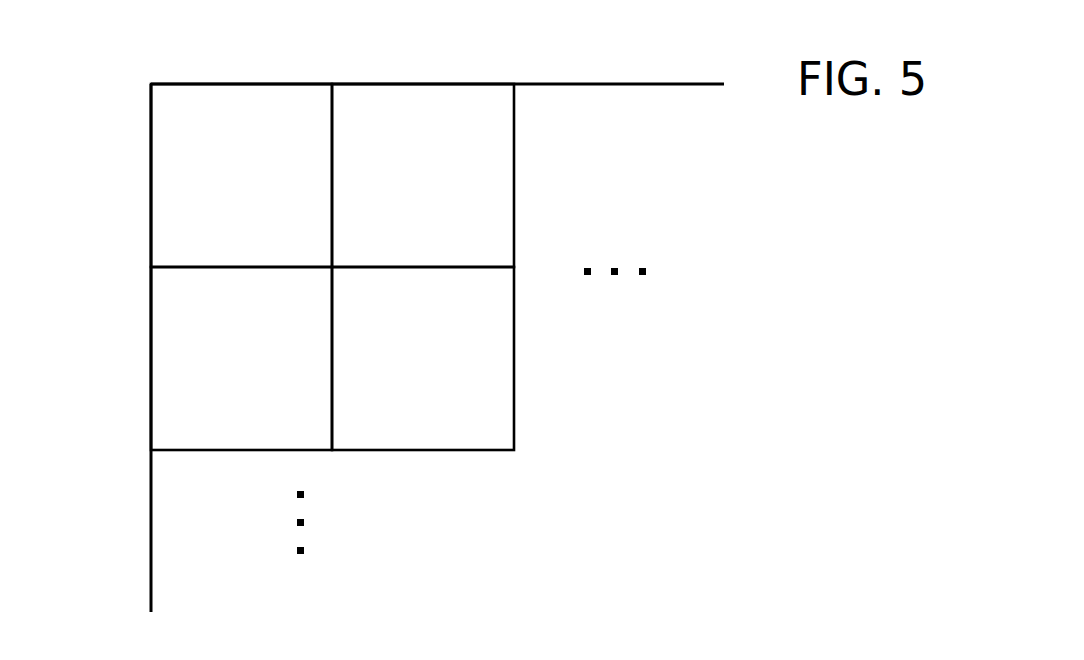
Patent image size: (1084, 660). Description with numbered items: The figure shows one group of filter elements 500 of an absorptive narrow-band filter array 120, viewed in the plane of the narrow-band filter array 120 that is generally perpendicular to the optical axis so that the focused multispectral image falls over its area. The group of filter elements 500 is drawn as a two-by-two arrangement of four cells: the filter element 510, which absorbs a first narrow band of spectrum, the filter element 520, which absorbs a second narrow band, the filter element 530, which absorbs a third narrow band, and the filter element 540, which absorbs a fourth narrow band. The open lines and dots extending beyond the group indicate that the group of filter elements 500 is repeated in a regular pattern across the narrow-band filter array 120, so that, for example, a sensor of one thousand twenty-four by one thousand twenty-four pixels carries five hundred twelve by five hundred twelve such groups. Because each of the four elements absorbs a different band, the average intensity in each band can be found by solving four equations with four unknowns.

The group of filter elements 500 is at (285, 267).
The filter element 510 is at (241, 175).
The filter element 520 is at (423, 175).
The filter element 530 is at (241, 358).
The filter element 540 is at (423, 358).
The narrow-band filter array 120 is at (625, 162).